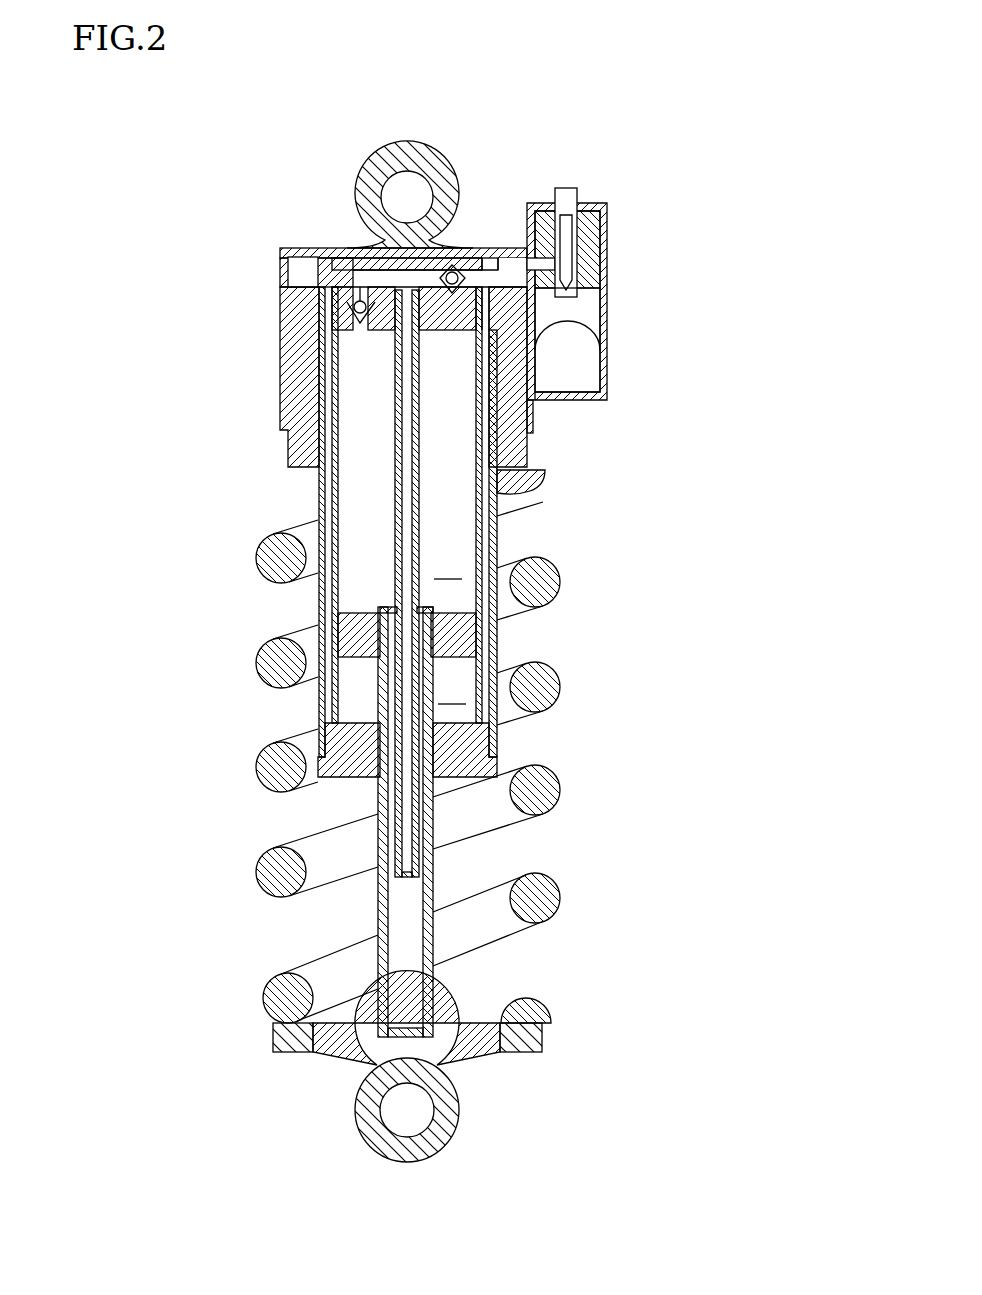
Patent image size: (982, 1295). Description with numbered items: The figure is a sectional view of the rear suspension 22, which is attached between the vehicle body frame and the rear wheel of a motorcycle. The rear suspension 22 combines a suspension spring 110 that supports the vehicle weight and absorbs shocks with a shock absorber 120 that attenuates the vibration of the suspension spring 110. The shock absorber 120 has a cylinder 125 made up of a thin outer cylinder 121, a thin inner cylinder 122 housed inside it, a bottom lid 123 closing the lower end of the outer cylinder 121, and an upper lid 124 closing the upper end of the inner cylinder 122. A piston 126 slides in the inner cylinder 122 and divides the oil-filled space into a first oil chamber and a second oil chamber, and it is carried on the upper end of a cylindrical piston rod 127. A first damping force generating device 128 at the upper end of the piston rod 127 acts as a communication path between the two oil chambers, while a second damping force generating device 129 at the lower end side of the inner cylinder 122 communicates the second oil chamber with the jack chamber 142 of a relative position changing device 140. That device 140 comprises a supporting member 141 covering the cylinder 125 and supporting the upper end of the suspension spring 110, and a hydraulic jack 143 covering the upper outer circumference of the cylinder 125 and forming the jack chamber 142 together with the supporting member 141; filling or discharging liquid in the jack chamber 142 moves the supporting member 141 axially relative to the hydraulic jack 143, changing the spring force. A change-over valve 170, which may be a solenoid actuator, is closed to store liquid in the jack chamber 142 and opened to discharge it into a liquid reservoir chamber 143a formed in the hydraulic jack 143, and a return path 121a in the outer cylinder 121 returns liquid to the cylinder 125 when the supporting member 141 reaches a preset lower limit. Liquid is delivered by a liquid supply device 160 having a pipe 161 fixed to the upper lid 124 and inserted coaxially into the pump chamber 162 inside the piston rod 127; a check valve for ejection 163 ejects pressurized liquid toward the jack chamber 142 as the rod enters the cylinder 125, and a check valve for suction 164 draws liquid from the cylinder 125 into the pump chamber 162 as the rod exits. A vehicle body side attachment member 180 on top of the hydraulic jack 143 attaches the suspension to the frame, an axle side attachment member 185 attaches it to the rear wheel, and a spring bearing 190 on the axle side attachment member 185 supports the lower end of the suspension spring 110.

The rear suspension 22 is at (233, 195).
The suspension spring 110 is at (277, 980).
The shock absorber 120 is at (300, 600).
The outer cylinder 121 is at (318, 500).
The return path 121a is at (537, 358).
The inner cylinder 122 is at (500, 522).
The bottom lid 123 is at (497, 765).
The upper lid 124 is at (317, 268).
The cylinder 125 is at (505, 550).
The piston 126 is at (485, 636).
The piston rod 127 is at (378, 817).
The first damping force generating device 128 is at (363, 602).
The second damping force generating device 129 is at (447, 344).
The relative position changing device 140 is at (569, 172).
The supporting member 141 is at (528, 452).
The jack chamber 142 is at (508, 268).
The hydraulic jack 143 is at (528, 418).
The liquid reservoir chamber 143a is at (583, 310).
The liquid supply device 160 is at (452, 859).
The pipe 161 is at (395, 410).
The pump chamber 162 is at (410, 982).
The check valve for ejection 163 is at (460, 250).
The check valve for suction 164 is at (352, 248).
The change-over valve 170 is at (578, 197).
The vehicle body side attachment member 180 is at (400, 146).
The axle side attachment member 185 is at (357, 1102).
The spring bearing 190 is at (273, 1033).